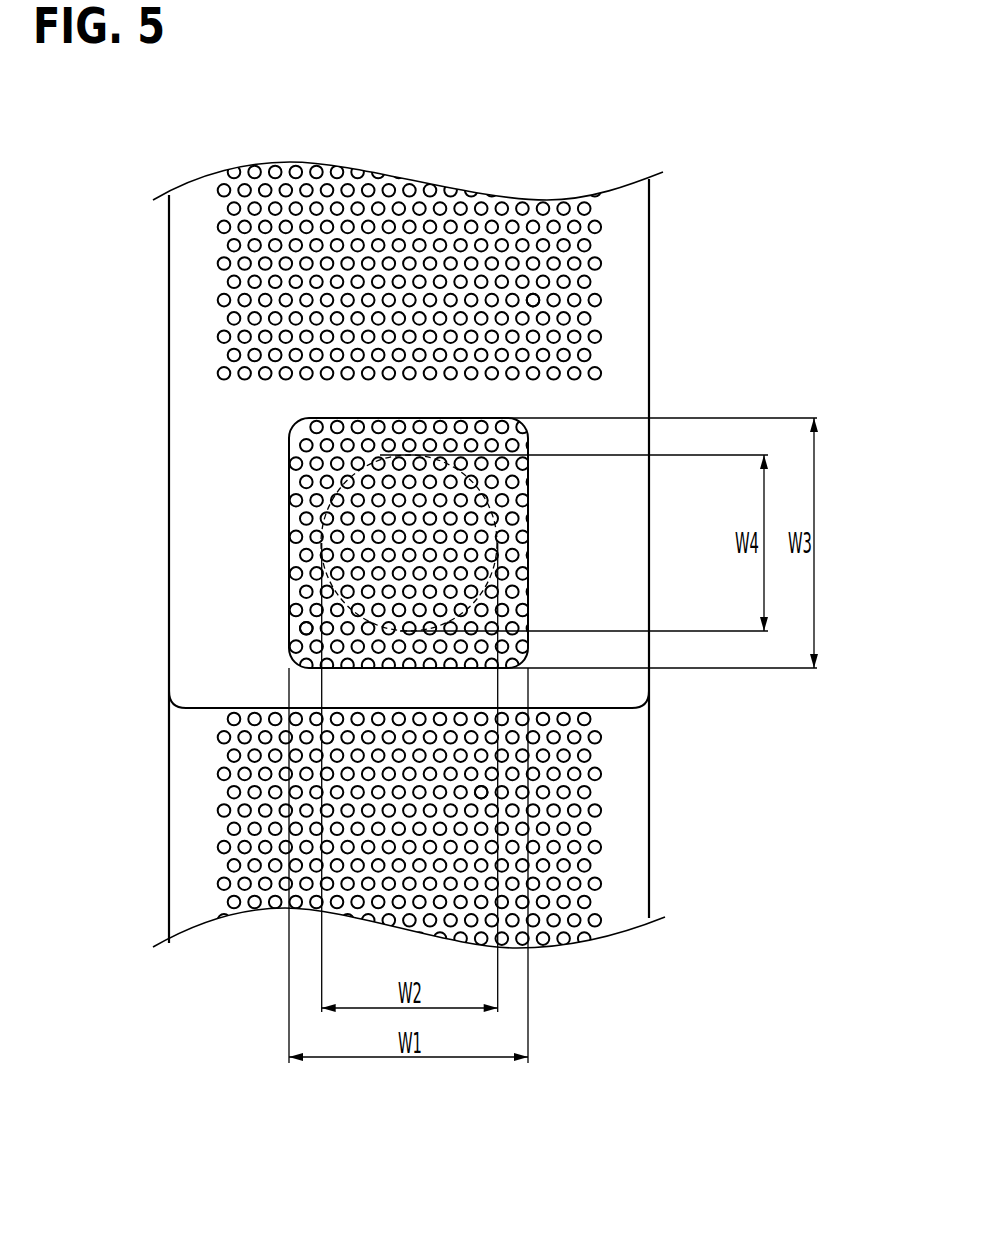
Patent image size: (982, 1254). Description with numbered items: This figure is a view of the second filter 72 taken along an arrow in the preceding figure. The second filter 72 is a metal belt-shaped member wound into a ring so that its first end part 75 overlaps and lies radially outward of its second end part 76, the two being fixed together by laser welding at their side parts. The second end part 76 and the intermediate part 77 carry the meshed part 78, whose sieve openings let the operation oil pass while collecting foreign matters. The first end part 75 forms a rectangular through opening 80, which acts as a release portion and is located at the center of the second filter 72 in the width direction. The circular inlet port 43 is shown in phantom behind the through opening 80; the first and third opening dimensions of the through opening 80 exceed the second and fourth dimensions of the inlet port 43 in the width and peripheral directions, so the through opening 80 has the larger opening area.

The second filter 72 is at (169, 273).
The intermediate part 77 is at (627, 250).
The meshed part 78 is at (522, 305).
The through opening 80 is at (328, 420).
The second end part 76 is at (515, 490).
The first end part 75 is at (618, 552).
The inlet port 43 is at (327, 575).